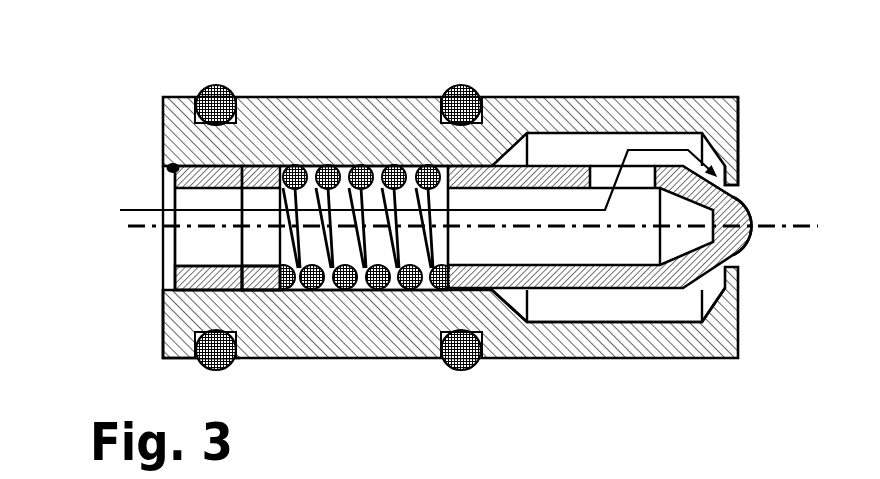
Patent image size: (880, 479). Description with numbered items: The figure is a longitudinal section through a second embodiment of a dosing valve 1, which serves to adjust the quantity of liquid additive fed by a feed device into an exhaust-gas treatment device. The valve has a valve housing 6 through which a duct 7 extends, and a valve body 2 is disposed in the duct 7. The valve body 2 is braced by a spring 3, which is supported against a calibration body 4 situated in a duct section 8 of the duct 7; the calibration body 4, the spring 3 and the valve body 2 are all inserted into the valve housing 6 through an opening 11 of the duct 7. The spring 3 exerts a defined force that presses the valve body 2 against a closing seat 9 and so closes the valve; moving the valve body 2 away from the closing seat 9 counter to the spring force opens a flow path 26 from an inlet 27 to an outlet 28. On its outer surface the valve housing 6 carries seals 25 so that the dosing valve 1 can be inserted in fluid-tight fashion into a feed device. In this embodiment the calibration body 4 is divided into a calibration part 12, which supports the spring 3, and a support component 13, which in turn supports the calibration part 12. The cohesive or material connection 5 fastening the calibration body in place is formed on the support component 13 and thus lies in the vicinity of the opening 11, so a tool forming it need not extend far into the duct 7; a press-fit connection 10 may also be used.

The dosing valve 1 is at (426, 218).
The valve body 2 is at (597, 292).
The spring 3 is at (350, 165).
The calibration body 4 is at (265, 166).
The cohesive or material connection 5 is at (160, 178).
The valve housing 6 is at (552, 97).
The duct 7 is at (653, 310).
The duct section 8 is at (162, 277).
The closing seat 9 is at (738, 178).
The press-fit connection 10 is at (260, 292).
The opening 11 is at (160, 187).
The calibration part 12 is at (265, 263).
The support component 13 is at (208, 263).
The seals 25 is at (213, 86).
The flow path 26 is at (672, 162).
The inlet 27 is at (168, 273).
The outlet 28 is at (753, 240).